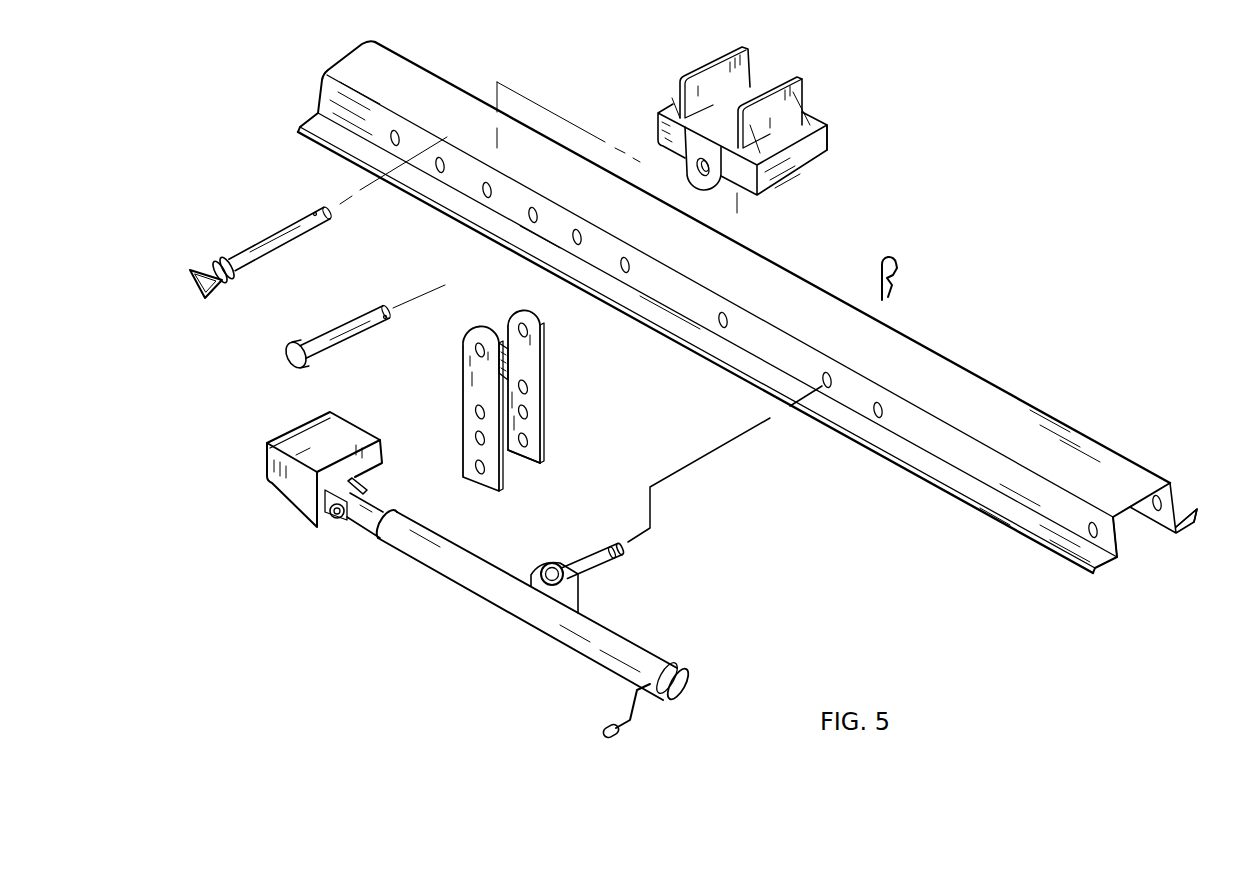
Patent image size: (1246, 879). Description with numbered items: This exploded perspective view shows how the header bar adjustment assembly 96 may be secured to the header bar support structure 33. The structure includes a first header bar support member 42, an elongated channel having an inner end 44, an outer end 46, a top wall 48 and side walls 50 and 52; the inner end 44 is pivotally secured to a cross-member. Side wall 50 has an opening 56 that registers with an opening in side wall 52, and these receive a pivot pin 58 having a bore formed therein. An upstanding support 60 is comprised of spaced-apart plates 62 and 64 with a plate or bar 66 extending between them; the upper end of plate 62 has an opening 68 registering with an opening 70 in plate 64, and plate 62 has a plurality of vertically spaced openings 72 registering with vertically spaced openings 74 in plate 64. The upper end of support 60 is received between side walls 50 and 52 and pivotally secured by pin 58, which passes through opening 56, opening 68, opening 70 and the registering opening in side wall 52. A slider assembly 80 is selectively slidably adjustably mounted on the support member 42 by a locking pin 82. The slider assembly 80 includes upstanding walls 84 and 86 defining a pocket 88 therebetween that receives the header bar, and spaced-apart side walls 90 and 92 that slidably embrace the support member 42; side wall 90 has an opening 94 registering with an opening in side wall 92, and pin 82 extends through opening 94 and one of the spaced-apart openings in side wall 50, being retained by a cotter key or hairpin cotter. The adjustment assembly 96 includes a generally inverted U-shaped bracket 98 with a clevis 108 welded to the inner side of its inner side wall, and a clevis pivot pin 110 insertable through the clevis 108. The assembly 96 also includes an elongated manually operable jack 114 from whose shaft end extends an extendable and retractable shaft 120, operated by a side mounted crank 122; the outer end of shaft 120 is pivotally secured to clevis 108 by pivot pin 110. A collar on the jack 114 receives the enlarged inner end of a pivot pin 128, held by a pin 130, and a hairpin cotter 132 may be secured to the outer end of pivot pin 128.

The header bar support structure 33 is at (945, 295).
The first header bar support member 42 is at (1003, 383).
The inner end 44 is at (1130, 547).
The outer end 46 is at (338, 66).
The top wall 48 is at (1055, 450).
The side wall 50 is at (1060, 517).
The side wall 52 is at (1180, 492).
The opening 56 is at (818, 378).
The pivot pin 58 is at (338, 322).
The upstanding support 60 is at (523, 412).
The plate 62 is at (480, 386).
The plate 64 is at (532, 433).
The plate or bar 66 is at (540, 356).
The opening 68 is at (473, 346).
The opening 70 is at (523, 326).
The vertically spaced openings 72 is at (470, 473).
The vertically spaced openings 74 is at (538, 464).
The slider assembly 80 is at (756, 136).
The locking pin 82 is at (252, 245).
The upstanding wall 84 is at (803, 82).
The upstanding wall 86 is at (705, 62).
The pocket 88 is at (713, 112).
The side wall 90 is at (752, 188).
The side wall 92 is at (828, 145).
The opening 94 is at (695, 168).
The assembly 96 is at (507, 616).
The inverted U-shaped bracket 98 is at (345, 462).
The clevis 108 is at (379, 483).
The clevis pivot pin 110 is at (330, 523).
The jack 114 is at (461, 595).
The extendable and retractable shaft 120 is at (370, 523).
The crank 122 is at (623, 701).
The pivot pin 128 is at (597, 578).
The pin 130 is at (538, 574).
The hairpin cotter 132 is at (887, 252).